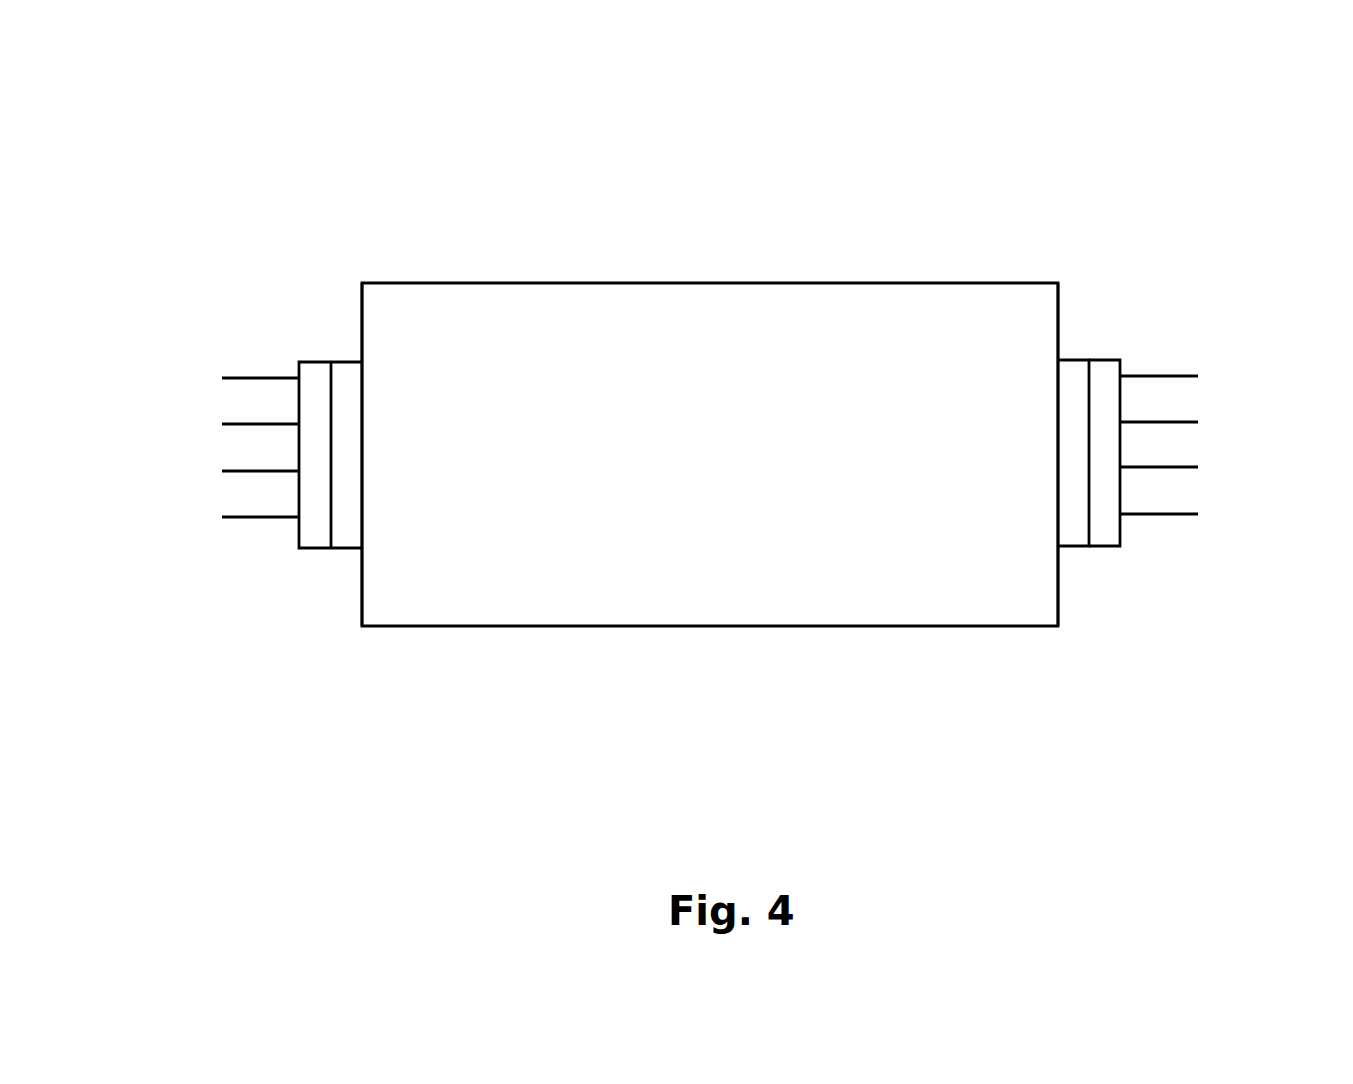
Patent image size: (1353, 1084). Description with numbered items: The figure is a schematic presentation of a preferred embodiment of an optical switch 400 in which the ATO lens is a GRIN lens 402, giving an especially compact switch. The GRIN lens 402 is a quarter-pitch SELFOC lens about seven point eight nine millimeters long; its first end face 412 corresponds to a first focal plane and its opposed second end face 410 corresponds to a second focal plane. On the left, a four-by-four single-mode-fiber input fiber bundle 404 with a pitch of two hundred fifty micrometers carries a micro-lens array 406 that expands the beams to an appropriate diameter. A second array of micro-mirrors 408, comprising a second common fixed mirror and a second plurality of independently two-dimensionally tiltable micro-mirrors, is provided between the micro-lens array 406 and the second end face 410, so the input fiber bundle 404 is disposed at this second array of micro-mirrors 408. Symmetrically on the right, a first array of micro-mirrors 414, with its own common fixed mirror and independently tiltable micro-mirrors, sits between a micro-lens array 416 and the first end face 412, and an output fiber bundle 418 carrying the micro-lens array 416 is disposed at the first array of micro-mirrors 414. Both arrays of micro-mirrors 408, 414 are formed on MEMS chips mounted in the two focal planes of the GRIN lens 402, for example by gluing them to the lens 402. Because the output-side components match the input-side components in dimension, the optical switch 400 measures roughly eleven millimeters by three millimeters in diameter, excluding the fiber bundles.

The optical switch 400 is at (872, 153).
The GRIN lens 402 is at (388, 283).
The input fiber bundle 404 is at (240, 517).
The micro-lens array 406 is at (315, 548).
The second array of micro-mirrors 408 is at (345, 548).
The second end face 410 is at (362, 310).
The first end face 412 is at (1058, 305).
The first array of micro-mirrors 414 is at (1073, 545).
The micro-lens array 416 is at (1107, 545).
The output fiber bundle 418 is at (1162, 373).